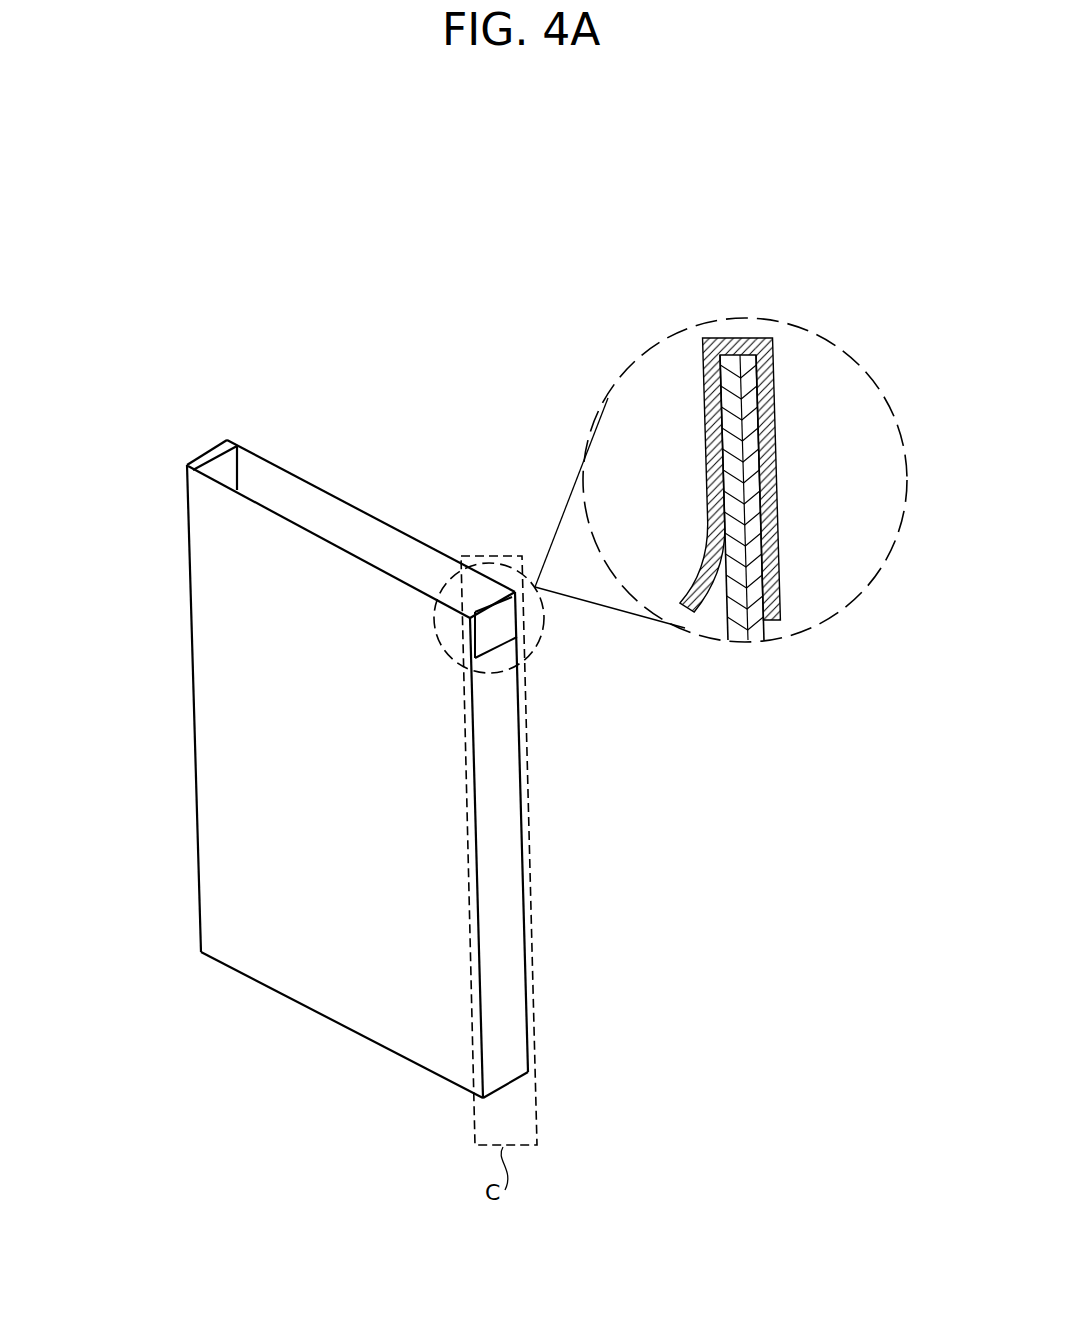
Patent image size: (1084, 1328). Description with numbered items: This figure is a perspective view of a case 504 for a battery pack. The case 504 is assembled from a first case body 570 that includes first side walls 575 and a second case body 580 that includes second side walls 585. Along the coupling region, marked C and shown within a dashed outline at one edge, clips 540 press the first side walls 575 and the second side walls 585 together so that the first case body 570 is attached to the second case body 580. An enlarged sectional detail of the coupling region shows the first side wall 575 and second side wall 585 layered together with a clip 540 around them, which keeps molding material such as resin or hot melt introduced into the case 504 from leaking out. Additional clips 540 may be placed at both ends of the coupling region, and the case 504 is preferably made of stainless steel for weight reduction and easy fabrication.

The case 504 is at (272, 1018).
The clip 540 is at (503, 629).
The first case body 570 is at (358, 497).
The first side wall 575 is at (703, 408).
The second case body 580 is at (222, 589).
The second side wall 585 is at (773, 389).